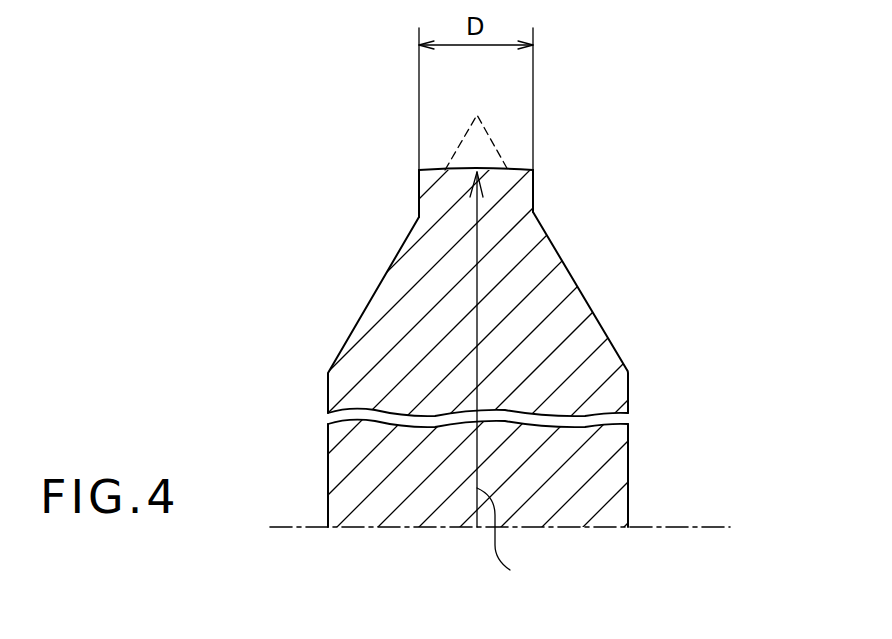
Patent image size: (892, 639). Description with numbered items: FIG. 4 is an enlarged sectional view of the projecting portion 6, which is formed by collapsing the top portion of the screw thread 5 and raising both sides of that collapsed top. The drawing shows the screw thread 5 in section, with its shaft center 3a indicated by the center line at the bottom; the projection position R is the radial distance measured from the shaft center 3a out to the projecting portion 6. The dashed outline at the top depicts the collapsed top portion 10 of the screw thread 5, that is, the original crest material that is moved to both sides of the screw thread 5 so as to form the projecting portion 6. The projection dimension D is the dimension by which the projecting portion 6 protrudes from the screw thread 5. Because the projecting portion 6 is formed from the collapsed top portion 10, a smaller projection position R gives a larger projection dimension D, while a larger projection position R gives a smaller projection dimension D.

The shaft center 3a is at (690, 525).
The screw thread 5 is at (577, 310).
The projecting portion 6 is at (428, 181).
The collapsed top portion 10 is at (462, 152).